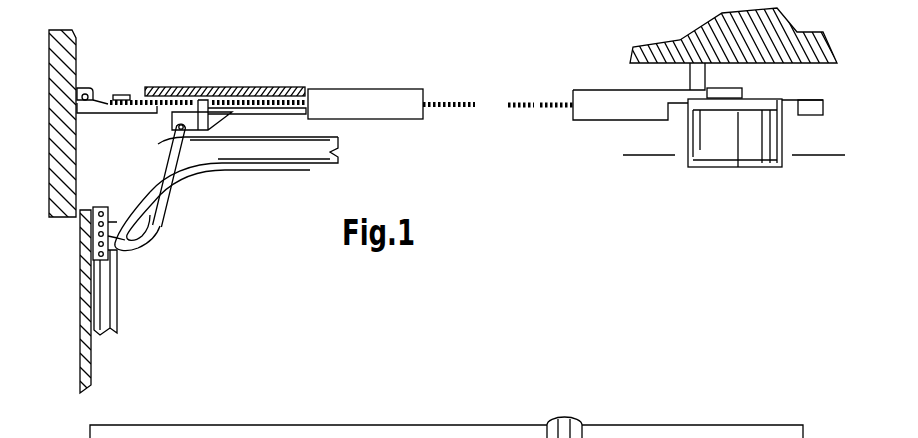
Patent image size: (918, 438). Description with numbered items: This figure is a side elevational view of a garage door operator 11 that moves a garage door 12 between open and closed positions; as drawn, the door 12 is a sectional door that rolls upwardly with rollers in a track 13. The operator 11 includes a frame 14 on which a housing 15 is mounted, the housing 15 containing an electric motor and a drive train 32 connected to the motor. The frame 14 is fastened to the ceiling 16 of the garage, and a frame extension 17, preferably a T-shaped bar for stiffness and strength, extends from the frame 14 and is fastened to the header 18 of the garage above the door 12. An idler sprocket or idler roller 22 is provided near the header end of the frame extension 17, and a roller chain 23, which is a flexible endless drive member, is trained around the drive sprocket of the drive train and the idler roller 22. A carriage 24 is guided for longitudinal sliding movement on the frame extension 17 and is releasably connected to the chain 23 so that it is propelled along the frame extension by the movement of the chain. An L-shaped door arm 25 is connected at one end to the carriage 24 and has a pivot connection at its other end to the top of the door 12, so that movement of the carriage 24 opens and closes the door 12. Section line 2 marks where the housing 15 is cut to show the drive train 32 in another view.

The section line 2 is at (828, 162).
The garage door operator 11 is at (537, 241).
The garage door 12 is at (83, 353).
The track 13 is at (263, 166).
The frame 14 is at (760, 100).
The housing 15 is at (737, 160).
The ceiling 16 is at (823, 63).
The frame extension 17 is at (355, 88).
The header 18 is at (43, 133).
The idler roller 22 is at (117, 94).
The roller chain 23 is at (545, 112).
The carriage 24 is at (167, 143).
The door arm 25 is at (158, 223).
The drive train 32 is at (726, 77).